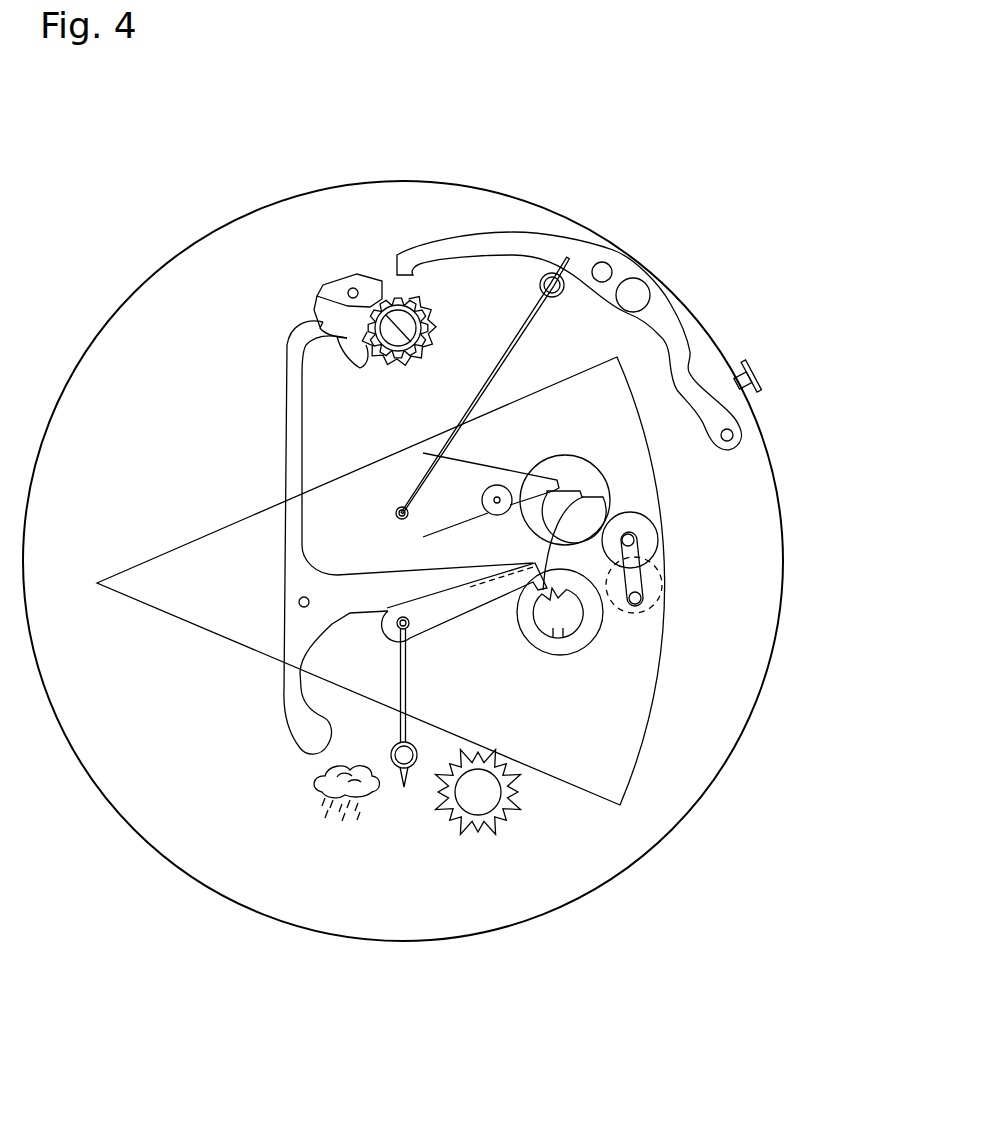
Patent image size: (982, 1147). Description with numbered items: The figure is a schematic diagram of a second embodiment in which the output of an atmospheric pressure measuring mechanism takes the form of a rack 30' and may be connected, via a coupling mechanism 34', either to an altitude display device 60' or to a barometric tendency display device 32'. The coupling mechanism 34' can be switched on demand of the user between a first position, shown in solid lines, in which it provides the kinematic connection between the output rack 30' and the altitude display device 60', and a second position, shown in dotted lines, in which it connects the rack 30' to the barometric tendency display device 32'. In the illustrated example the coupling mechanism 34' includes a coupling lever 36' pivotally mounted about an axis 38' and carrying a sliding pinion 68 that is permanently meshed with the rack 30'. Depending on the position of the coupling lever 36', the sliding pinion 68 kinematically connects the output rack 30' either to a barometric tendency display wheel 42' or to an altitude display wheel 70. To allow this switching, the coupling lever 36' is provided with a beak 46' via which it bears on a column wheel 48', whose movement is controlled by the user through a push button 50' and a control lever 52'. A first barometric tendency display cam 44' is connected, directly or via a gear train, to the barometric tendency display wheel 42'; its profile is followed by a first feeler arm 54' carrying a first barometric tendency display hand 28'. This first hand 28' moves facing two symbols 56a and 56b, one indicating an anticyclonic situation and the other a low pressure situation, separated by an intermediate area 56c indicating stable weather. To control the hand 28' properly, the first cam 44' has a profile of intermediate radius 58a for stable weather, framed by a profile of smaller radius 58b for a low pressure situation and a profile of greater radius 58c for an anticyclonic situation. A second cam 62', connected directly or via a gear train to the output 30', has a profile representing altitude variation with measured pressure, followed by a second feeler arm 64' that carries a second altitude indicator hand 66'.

The first barometric tendency display hand 28' is at (403, 802).
The output rack 30' is at (411, 581).
The barometric tendency display device 32' is at (348, 460).
The coupling mechanism 34' is at (471, 470).
The coupling lever 36' is at (432, 565).
The axis 38' is at (252, 645).
The barometric tendency display wheel 42' is at (568, 650).
The first barometric tendency display cam 44' is at (549, 660).
The beak 46' is at (379, 465).
The column wheel 48' is at (375, 257).
The push button 50' is at (766, 363).
The control lever 52' is at (569, 313).
The first feeler arm 54' is at (464, 620).
The symbol 56a is at (503, 807).
The symbol 56b is at (315, 783).
The intermediate area 56c is at (412, 830).
The profile of intermediate radius 58a is at (547, 480).
The profile of smaller radius 58b is at (598, 640).
The profile of greater radius 58c is at (520, 630).
The altitude display device 60' is at (485, 330).
The second cam 62' is at (574, 433).
The second feeler arm 64' is at (476, 471).
The second altitude indicator hand 66' is at (532, 229).
The sliding pinion 68 is at (630, 512).
The altitude display wheel 70 is at (563, 477).